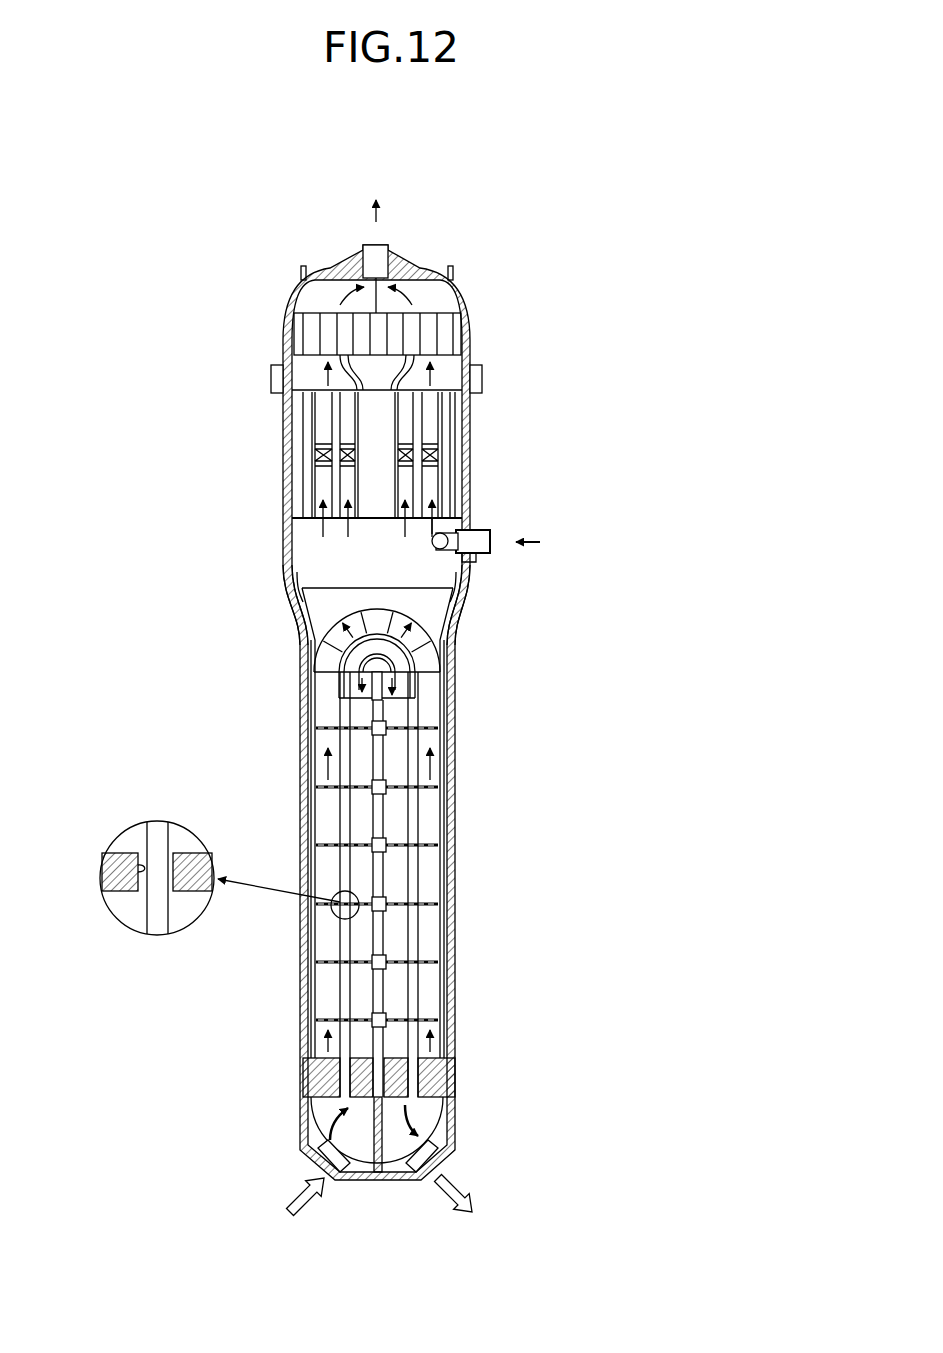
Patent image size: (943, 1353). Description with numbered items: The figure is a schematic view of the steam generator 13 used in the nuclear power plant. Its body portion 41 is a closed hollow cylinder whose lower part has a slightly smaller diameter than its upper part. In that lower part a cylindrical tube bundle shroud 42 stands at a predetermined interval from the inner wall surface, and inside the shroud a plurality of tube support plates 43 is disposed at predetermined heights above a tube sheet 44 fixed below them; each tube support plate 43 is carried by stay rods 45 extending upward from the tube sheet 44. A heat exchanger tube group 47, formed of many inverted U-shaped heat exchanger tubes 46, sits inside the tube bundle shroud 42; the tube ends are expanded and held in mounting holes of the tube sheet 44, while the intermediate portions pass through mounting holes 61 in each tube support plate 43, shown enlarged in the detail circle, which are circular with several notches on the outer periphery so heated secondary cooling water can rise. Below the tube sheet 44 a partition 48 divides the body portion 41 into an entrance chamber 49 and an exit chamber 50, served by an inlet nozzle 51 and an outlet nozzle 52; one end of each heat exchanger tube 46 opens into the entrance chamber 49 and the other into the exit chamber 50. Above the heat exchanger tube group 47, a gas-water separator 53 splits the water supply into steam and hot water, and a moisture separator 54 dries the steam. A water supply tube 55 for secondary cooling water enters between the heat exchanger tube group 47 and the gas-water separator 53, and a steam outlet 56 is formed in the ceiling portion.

The steam generator 13 is at (612, 164).
The body portion 41 is at (298, 990).
The tube bundle shroud 42 is at (298, 620).
The tube support plates 43 is at (425, 728).
The tube sheet 44 is at (455, 1080).
The stay rods 45 is at (382, 932).
The heat exchanger tubes 46 is at (340, 820).
The heat exchanger tube group 47 is at (424, 633).
The partition 48 is at (385, 1172).
The entrance chamber 49 is at (323, 1118).
The exit chamber 50 is at (433, 1117).
The inlet nozzle 51 is at (327, 1170).
The outlet nozzle 52 is at (435, 1177).
The gas-water separator 53 is at (308, 496).
The moisture separator 54 is at (443, 341).
The water supply tube 55 is at (488, 531).
The steam outlet 56 is at (377, 256).
The mounting holes 61 is at (102, 867).